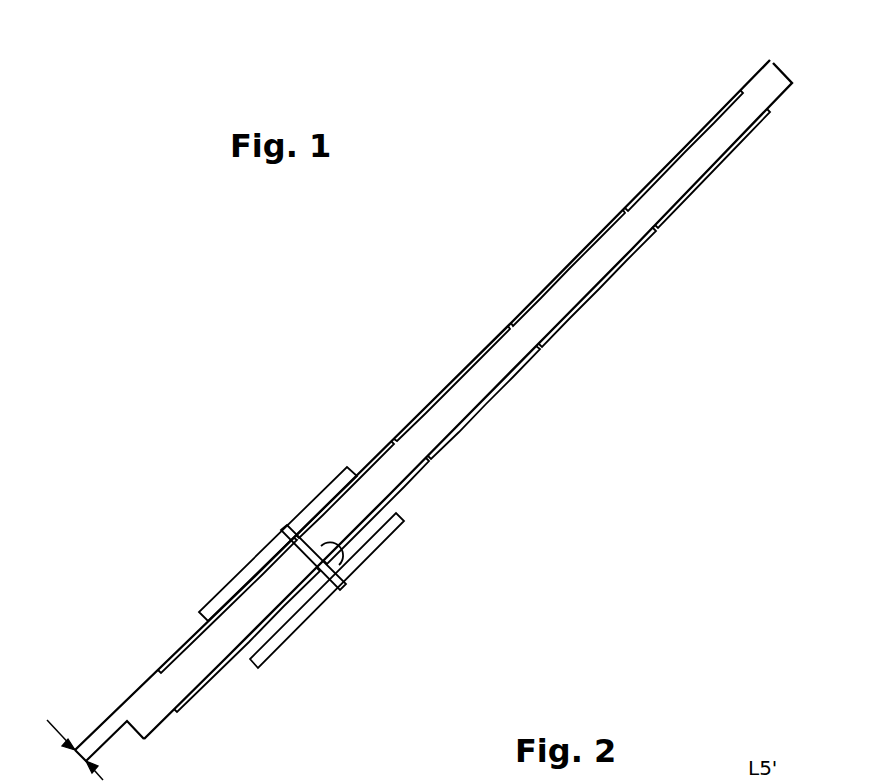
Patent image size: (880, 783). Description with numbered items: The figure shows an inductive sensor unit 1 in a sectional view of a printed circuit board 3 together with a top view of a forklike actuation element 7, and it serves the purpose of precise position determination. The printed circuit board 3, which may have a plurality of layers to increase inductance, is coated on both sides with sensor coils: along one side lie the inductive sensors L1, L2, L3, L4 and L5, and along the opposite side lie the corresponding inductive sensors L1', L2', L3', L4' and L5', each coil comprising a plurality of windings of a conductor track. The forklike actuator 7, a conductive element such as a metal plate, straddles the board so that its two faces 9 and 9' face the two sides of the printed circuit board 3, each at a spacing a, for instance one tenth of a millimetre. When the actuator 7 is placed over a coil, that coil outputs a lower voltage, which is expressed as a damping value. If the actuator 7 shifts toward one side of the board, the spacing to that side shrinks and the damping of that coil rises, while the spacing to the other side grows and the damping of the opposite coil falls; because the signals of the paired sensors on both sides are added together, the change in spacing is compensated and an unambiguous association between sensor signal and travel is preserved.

The inductive sensor unit 1 is at (355, 378).
The printed circuit board 3 is at (768, 78).
The forklike actuation element 7 is at (350, 556).
The face of the forklike actuator 9 is at (327, 599).
The face of the forklike actuator 9' is at (261, 544).
The spacing a is at (75, 750).
The inductive sensor L1 is at (247, 660).
The inductive sensor L2 is at (405, 511).
The inductive sensor L3 is at (484, 411).
The inductive sensor L4 is at (597, 288).
The inductive sensor L5 is at (718, 168).
The inductive sensor L1' is at (189, 605).
The inductive sensor L2' is at (334, 468).
The inductive sensor L3' is at (451, 372).
The inductive sensor L4' is at (568, 253).
The inductive sensor L5' is at (684, 146).